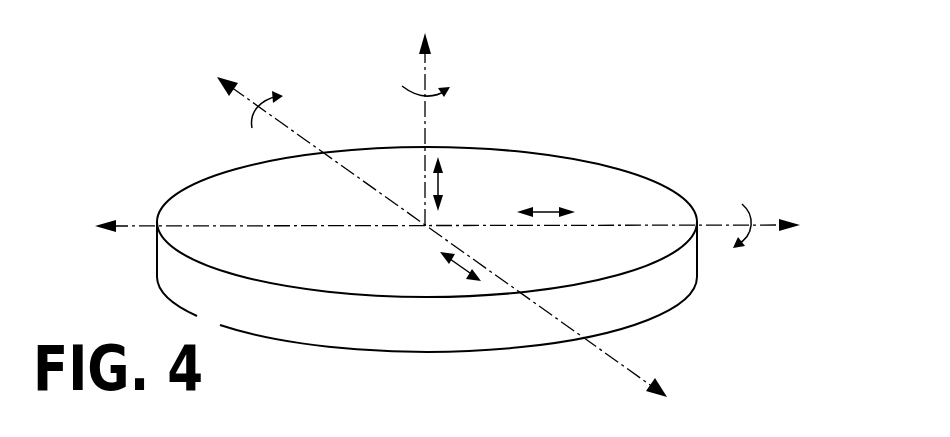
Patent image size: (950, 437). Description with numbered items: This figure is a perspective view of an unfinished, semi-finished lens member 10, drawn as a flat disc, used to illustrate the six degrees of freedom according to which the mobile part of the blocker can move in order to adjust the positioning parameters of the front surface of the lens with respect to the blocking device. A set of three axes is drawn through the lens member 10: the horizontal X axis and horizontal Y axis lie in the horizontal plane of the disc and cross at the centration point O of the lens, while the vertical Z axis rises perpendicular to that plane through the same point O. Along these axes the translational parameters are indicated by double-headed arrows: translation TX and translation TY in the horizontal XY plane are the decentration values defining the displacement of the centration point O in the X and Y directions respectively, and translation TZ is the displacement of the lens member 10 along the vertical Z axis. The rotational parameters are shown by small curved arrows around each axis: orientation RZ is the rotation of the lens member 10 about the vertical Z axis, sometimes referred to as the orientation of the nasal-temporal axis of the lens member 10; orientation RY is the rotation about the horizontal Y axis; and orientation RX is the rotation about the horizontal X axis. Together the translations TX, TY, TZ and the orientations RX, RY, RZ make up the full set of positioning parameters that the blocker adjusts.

The disc-shaped object (workpiece) 10 is at (621, 168).
The X direction X is at (463, 224).
The Y direction Y is at (432, 223).
The vertical Z axis Z is at (413, 116).
The centration point O is at (404, 247).
The orientation about the horizontal X axis RX is at (741, 248).
The orientation about the horizontal Y axis RY is at (279, 89).
The orientation about the vertical Z axis RZ is at (450, 74).
The translation in the X direction TX is at (546, 192).
The translation in the Y direction TY is at (441, 276).
The translation along the vertical axis TZ is at (466, 184).